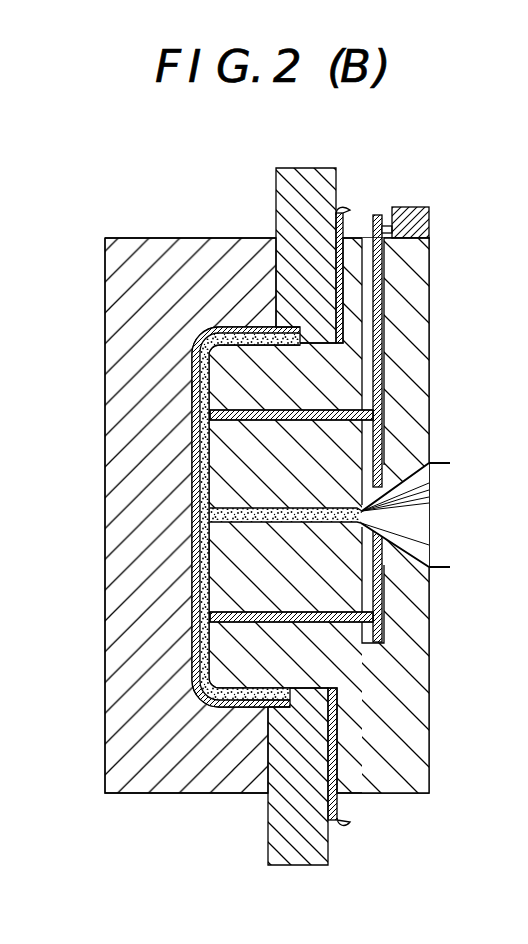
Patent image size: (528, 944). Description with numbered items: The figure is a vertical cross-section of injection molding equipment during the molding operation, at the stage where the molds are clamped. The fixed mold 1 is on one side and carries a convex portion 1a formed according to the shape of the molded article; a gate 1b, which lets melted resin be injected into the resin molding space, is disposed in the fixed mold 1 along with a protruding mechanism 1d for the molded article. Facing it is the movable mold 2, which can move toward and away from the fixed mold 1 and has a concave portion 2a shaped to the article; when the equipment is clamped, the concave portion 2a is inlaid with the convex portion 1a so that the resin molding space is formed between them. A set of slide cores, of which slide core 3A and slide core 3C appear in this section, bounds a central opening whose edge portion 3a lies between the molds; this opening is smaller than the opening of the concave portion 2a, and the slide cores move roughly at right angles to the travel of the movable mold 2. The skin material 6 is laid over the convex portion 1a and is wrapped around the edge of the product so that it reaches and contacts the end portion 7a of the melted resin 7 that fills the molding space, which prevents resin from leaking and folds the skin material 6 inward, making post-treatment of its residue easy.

The fixed mold 1 is at (420, 345).
The convex portion 1a is at (233, 357).
The gate 1b is at (208, 550).
The protruding mechanism 1d is at (300, 421).
The movable mold 2 is at (123, 302).
The concave portion 2a is at (193, 387).
The slide core 3A is at (276, 214).
The edge portion 3a is at (299, 330).
The slide core 3C is at (313, 843).
The skin material 6 is at (222, 703).
The resin 7 is at (192, 466).
The end portion 7a is at (240, 707).